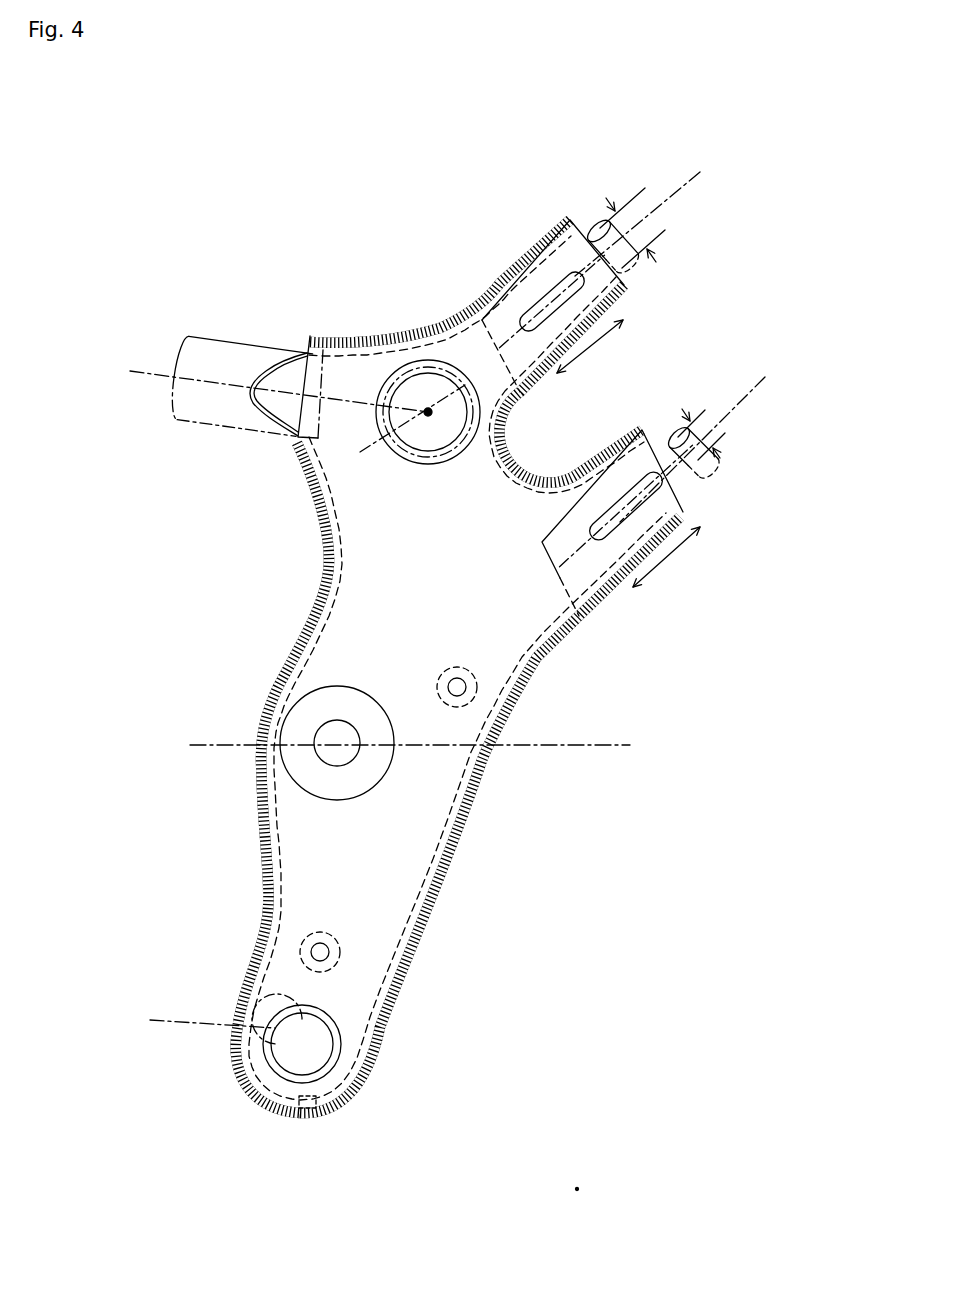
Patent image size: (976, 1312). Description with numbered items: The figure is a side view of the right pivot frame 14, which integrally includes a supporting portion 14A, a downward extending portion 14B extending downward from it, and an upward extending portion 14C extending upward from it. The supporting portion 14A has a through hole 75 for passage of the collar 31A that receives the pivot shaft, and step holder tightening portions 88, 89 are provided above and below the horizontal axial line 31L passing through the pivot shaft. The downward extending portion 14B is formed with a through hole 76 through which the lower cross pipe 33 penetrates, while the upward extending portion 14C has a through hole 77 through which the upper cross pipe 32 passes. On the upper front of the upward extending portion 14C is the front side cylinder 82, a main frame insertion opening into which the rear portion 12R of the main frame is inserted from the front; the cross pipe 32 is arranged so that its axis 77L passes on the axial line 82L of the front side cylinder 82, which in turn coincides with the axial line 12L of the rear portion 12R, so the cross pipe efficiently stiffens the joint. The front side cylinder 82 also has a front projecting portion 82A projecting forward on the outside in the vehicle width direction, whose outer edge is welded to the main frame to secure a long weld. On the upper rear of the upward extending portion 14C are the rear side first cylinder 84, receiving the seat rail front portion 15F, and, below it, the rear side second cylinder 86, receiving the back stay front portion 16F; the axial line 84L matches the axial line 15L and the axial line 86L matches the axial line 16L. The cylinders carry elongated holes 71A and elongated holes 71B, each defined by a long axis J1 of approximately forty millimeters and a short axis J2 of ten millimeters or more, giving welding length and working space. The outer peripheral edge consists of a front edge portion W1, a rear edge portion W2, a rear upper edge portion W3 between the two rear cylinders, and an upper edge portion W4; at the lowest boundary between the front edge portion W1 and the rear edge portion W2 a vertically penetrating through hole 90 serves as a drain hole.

The pivot frame 14 is at (226, 138).
The supporting portion 14A is at (457, 767).
The downward extending portion 14B is at (357, 996).
The upward extending portion 14C is at (357, 543).
The rear portion of the main frame 12R is at (216, 333).
The axial line of the rear portion of the main frame 12L is at (231, 384).
The axial line of the front side cylinder 82L is at (231, 384).
The front side cylinder 82 is at (342, 377).
The front projecting portion 82A is at (277, 368).
The through hole 77 is at (421, 376).
The axis of the cross pipe 77L is at (428, 412).
The upper cross pipe 32 is at (310, 482).
The front edge portion W1 is at (300, 630).
The rear edge portion W2 is at (480, 800).
The rear upper edge portion W3 is at (522, 460).
The upper edge portion W4 is at (456, 310).
The rear side first cylinder 84 is at (625, 284).
The axial line of the rear side first cylinder 84L is at (682, 211).
The axial line of the seat rail front portion 15L is at (682, 211).
The seat rail front portion 15F is at (582, 222).
The elongated holes 71A is at (542, 305).
The elongated holes 71B is at (627, 500).
The long axis J1 is at (628, 454).
The short axis J2 is at (674, 329).
The rear side second cylinder 86 is at (597, 567).
The axial line of the rear side second cylinder 86L is at (724, 440).
The axial line of the back stay front portion 16L is at (724, 440).
The back stay front portion 16F is at (695, 483).
The through hole 75 is at (310, 705).
The horizontal axial line 31L is at (390, 746).
The collar 31A is at (317, 787).
The step holder tightening portion 88 is at (477, 687).
The step holder tightening portion 89 is at (332, 953).
The through hole 76 is at (282, 1056).
The lower cross pipe 33 is at (195, 1020).
The through hole 90 is at (306, 1112).